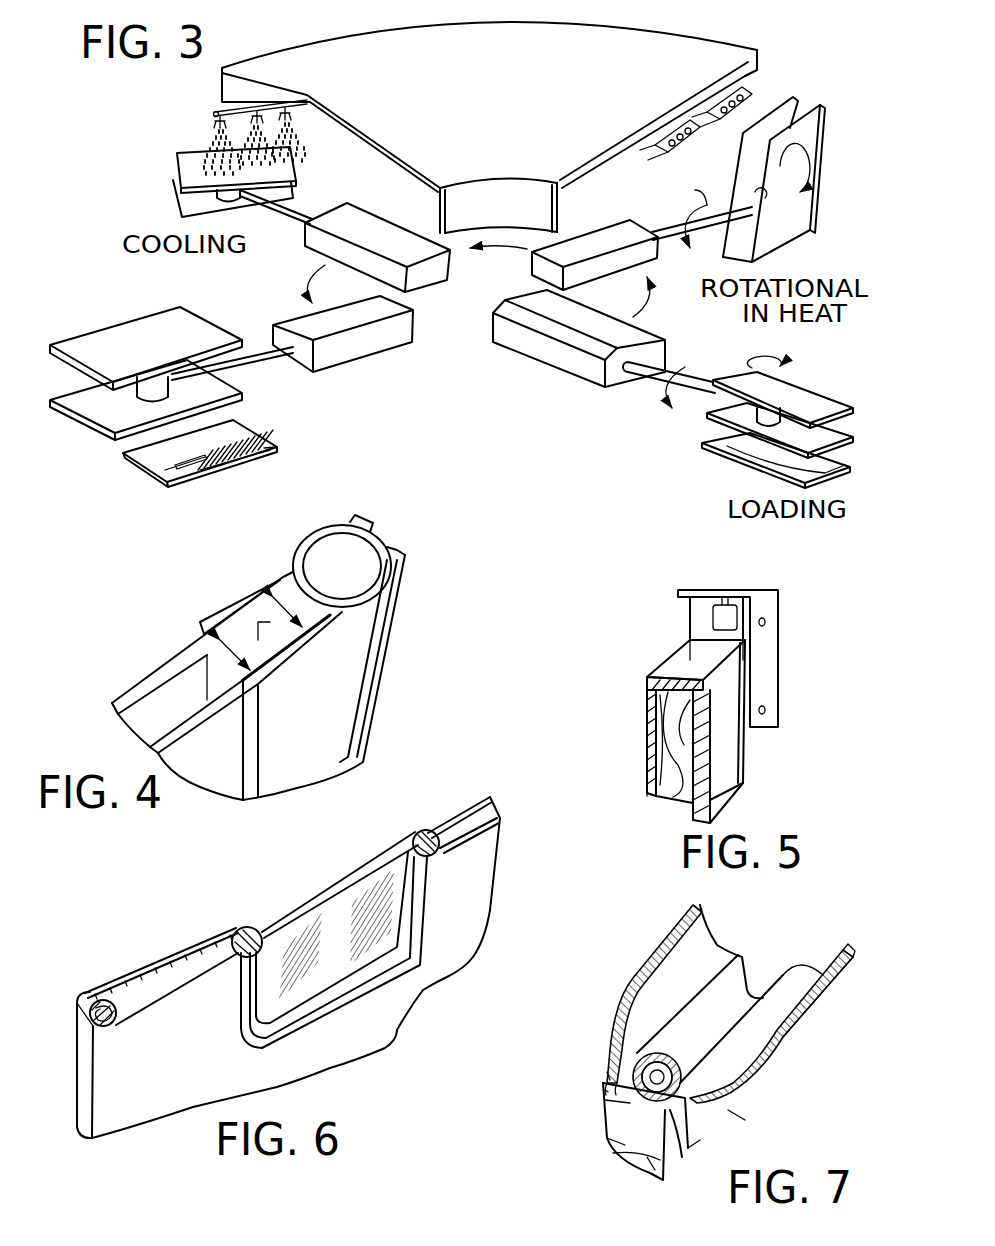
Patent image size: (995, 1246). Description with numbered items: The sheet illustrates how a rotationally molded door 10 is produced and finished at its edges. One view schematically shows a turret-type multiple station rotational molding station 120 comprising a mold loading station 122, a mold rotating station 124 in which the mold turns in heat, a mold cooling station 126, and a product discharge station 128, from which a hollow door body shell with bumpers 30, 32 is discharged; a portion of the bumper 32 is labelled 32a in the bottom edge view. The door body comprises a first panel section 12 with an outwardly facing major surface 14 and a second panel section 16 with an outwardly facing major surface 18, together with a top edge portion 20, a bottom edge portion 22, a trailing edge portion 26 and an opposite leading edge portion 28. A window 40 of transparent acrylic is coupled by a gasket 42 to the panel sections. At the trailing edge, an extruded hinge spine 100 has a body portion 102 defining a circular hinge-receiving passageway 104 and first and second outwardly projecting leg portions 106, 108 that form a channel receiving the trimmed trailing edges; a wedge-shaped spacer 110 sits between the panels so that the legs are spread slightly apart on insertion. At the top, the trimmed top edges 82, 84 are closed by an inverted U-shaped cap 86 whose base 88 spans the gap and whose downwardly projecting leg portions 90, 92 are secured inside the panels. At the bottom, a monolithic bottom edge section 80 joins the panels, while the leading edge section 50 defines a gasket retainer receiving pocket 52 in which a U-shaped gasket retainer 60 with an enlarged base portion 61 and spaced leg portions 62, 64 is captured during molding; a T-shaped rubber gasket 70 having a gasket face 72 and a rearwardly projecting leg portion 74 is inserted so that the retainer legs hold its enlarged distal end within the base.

In FIG. 3, the door 10 is at (135, 480).
In FIG. 4, the door 10 is at (108, 682).
In FIG. 5, the door 10 is at (636, 794).
In FIG. 6, the door 10 is at (84, 1147).
In FIG. 7, the door 10 is at (581, 1040).
In FIG. 4, the first panel section 12 is at (228, 772).
In FIG. 5, the first panel section 12 is at (719, 768).
In FIG. 6, the first panel section 12 is at (370, 1029).
In FIG. 7, the first panel section 12 is at (718, 1115).
In FIG. 4, the outwardly facing major surface 14 is at (195, 767).
In FIG. 5, the outwardly facing major surface 14 is at (718, 807).
In FIG. 6, the outwardly facing major surface 14 is at (329, 1060).
In FIG. 7, the outwardly facing major surface 14 is at (693, 1135).
In FIG. 4, the second panel section 16 is at (163, 665).
In FIG. 5, the second panel section 16 is at (645, 743).
In FIG. 6, the second panel section 16 is at (111, 983).
In FIG. 7, the second panel section 16 is at (607, 1015).
In FIG. 4, the outwardly facing major surface 18 is at (138, 680).
In FIG. 5, the outwardly facing major surface 18 is at (647, 730).
In FIG. 6, the outwardly facing major surface 18 is at (156, 965).
In FIG. 5, the top edge portion 20 is at (656, 636).
In FIG. 7, the bottom edge portion 22 is at (773, 977).
In FIG. 4, the trailing edge portion 26 is at (338, 623).
In FIG. 6, the leading edge portion 28 is at (105, 1114).
In FIG. 7, the leading edge portion 28 is at (605, 1073).
In FIG. 3, the bumper 30 is at (183, 476).
In FIG. 3, the bumper 32 is at (255, 450).
In FIG. 7, the bumper 32 is at (820, 1003).
In FIG. 7, the comb member end 32a is at (627, 985).
In FIG. 6, the window 40 is at (364, 937).
In FIG. 6, the gasket 42 is at (417, 919).
In FIG. 7, the leading edge section 50 is at (678, 1112).
In FIG. 7, the gasket retainer receiving pocket 52 is at (667, 1050).
In FIG. 7, the gasket retainer 60 is at (680, 1060).
In FIG. 7, the enlarged base portion 61 is at (778, 1037).
In FIG. 7, the first leg portion 62 is at (607, 1108).
In FIG. 7, the second leg portion 64 is at (612, 1145).
In FIG. 7, the gasket 70 is at (626, 1154).
In FIG. 7, the gasket face 72 is at (647, 1157).
In FIG. 7, the leg portion 74 is at (645, 1062).
In FIG. 7, the bottom edge section 80 is at (753, 1000).
In FIG. 5, the top edge 82 is at (720, 667).
In FIG. 5, the top edge 84 is at (672, 658).
In FIG. 5, the cap 86 is at (682, 673).
In FIG. 5, the base 88 is at (655, 703).
In FIG. 5, the leg portion 90 is at (687, 707).
In FIG. 5, the leg portion 92 is at (673, 797).
In FIG. 4, the hinge spine 100 is at (383, 695).
In FIG. 4, the body portion 102 is at (340, 526).
In FIG. 4, the hinge-receiving passageway 104 is at (358, 576).
In FIG. 4, the first outwardly projecting leg portion 106 is at (220, 608).
In FIG. 4, the second outwardly projecting leg portion 108 is at (292, 665).
In FIG. 4, the spacer 110 is at (258, 621).
In FIG. 5, the spacer 110 is at (712, 638).
In FIG. 3, the rotational molding station 120 is at (498, 383).
In FIG. 3, the mold loading station 122 is at (842, 387).
In FIG. 3, the mold rotating station 124 is at (823, 200).
In FIG. 3, the mold cooling station 126 is at (152, 189).
In FIG. 3, the product discharge station 128 is at (82, 440).